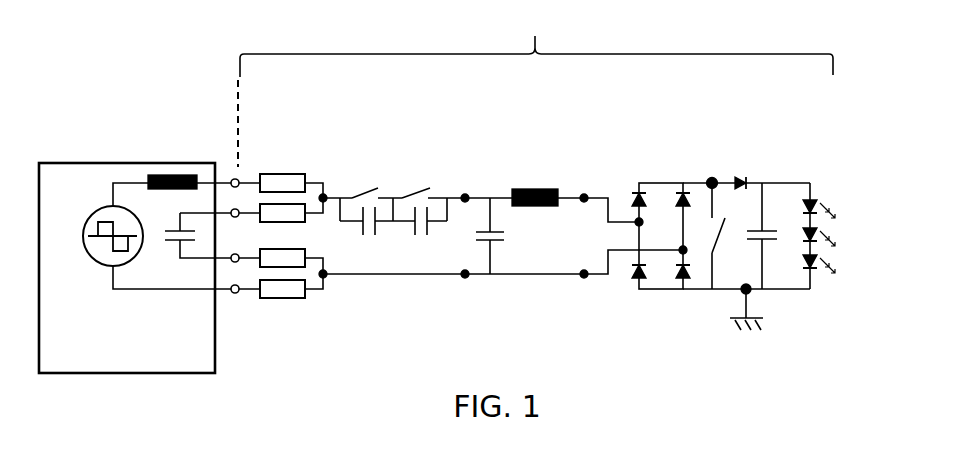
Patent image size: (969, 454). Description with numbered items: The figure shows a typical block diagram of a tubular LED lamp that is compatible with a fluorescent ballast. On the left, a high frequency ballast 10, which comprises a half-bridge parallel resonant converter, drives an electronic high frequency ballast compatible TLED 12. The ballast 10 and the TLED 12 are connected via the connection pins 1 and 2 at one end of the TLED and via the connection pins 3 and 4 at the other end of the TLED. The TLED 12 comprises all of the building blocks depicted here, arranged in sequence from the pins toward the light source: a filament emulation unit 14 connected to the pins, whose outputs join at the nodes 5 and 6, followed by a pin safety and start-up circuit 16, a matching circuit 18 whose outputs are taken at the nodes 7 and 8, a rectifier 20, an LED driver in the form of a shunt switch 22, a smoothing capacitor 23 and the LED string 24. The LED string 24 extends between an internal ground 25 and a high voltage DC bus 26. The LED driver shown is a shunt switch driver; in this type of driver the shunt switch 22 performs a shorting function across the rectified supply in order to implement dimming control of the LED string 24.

The connection pin 1 is at (234, 178).
The connection pin 2 is at (232, 209).
The connection pin 3 is at (238, 262).
The connection pin 4 is at (236, 293).
The first node 5 is at (324, 198).
The second node 6 is at (324, 274).
The third node 7 is at (584, 198).
The fourth node 8 is at (584, 274).
The high frequency ballast 10 is at (113, 163).
The high frequency compatible TLED 12 is at (536, 41).
The filament emulation unit 14 is at (273, 148).
The pin safety and start-up circuit 16 is at (386, 158).
The matching circuit 18 is at (530, 161).
The rectifier 20 is at (654, 151).
The shunt switch 22 is at (724, 151).
The smoothing capacitor 23 is at (769, 151).
The LED string 24 is at (824, 163).
The internal ground 25 is at (748, 290).
The high voltage DC bus 26 is at (712, 183).